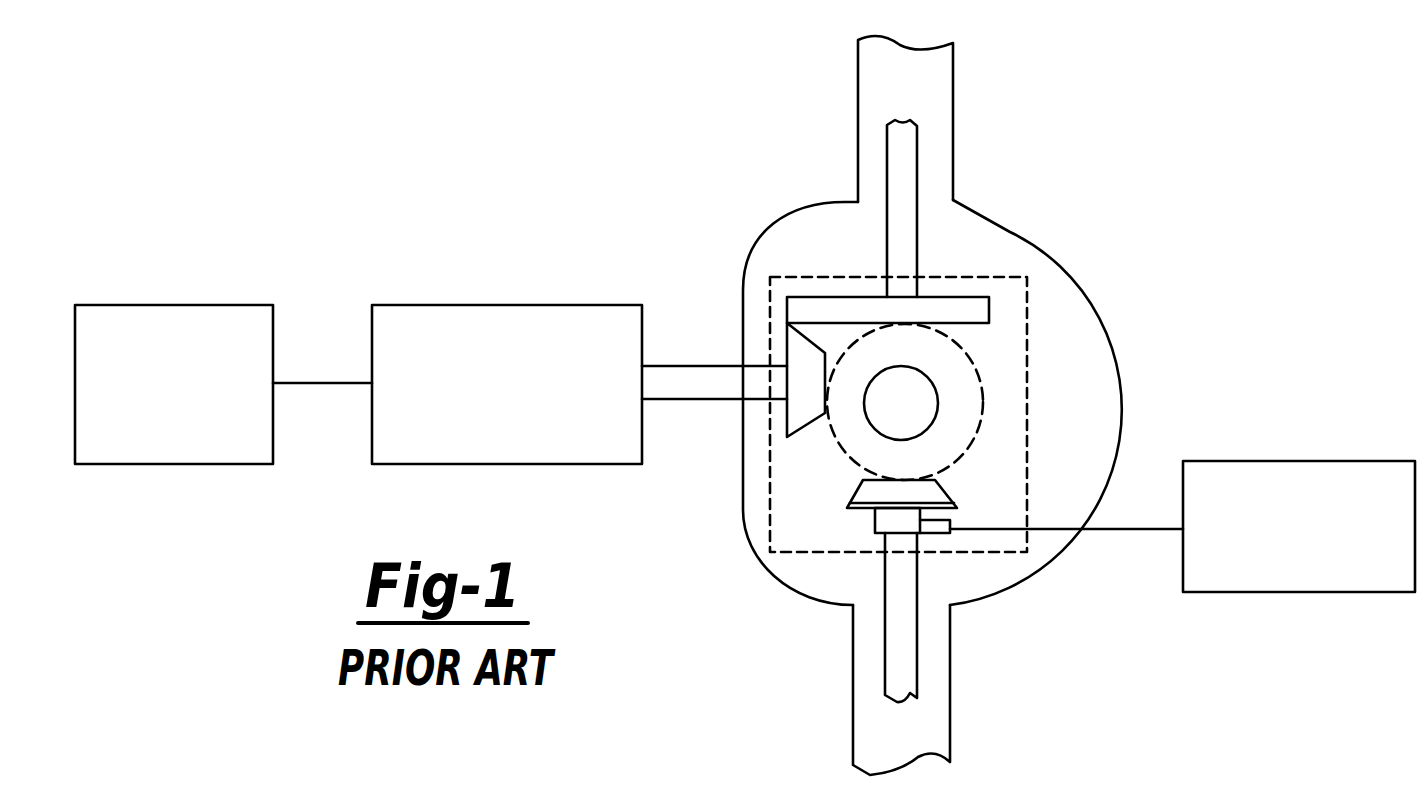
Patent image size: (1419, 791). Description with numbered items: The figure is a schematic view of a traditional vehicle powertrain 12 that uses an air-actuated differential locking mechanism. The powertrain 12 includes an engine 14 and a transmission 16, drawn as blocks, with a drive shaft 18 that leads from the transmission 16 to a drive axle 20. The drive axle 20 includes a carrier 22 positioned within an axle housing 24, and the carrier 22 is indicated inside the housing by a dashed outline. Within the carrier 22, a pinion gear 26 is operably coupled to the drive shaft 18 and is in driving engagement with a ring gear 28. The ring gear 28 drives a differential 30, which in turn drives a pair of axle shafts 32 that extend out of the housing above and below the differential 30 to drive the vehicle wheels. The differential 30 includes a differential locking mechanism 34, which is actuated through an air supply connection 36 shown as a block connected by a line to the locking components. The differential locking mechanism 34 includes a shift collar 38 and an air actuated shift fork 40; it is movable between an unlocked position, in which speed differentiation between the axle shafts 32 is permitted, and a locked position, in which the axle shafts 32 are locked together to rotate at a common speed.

The powertrain 12 is at (288, 212).
The engine 14 is at (237, 305).
The transmission 16 is at (478, 305).
The drive shaft 18 is at (692, 366).
The drive axle 20 is at (935, 117).
The carrier 22 is at (1027, 350).
The axle housing 24 is at (804, 247).
The pinion gear 26 is at (796, 432).
The ring gear 28 is at (973, 297).
The differential 30 is at (916, 416).
The axle shafts 32 is at (899, 172).
The differential locking mechanism 34 is at (816, 499).
The air supply connection 36 is at (1292, 592).
The shift collar 38 is at (942, 481).
The air actuated shift fork 40 is at (948, 535).